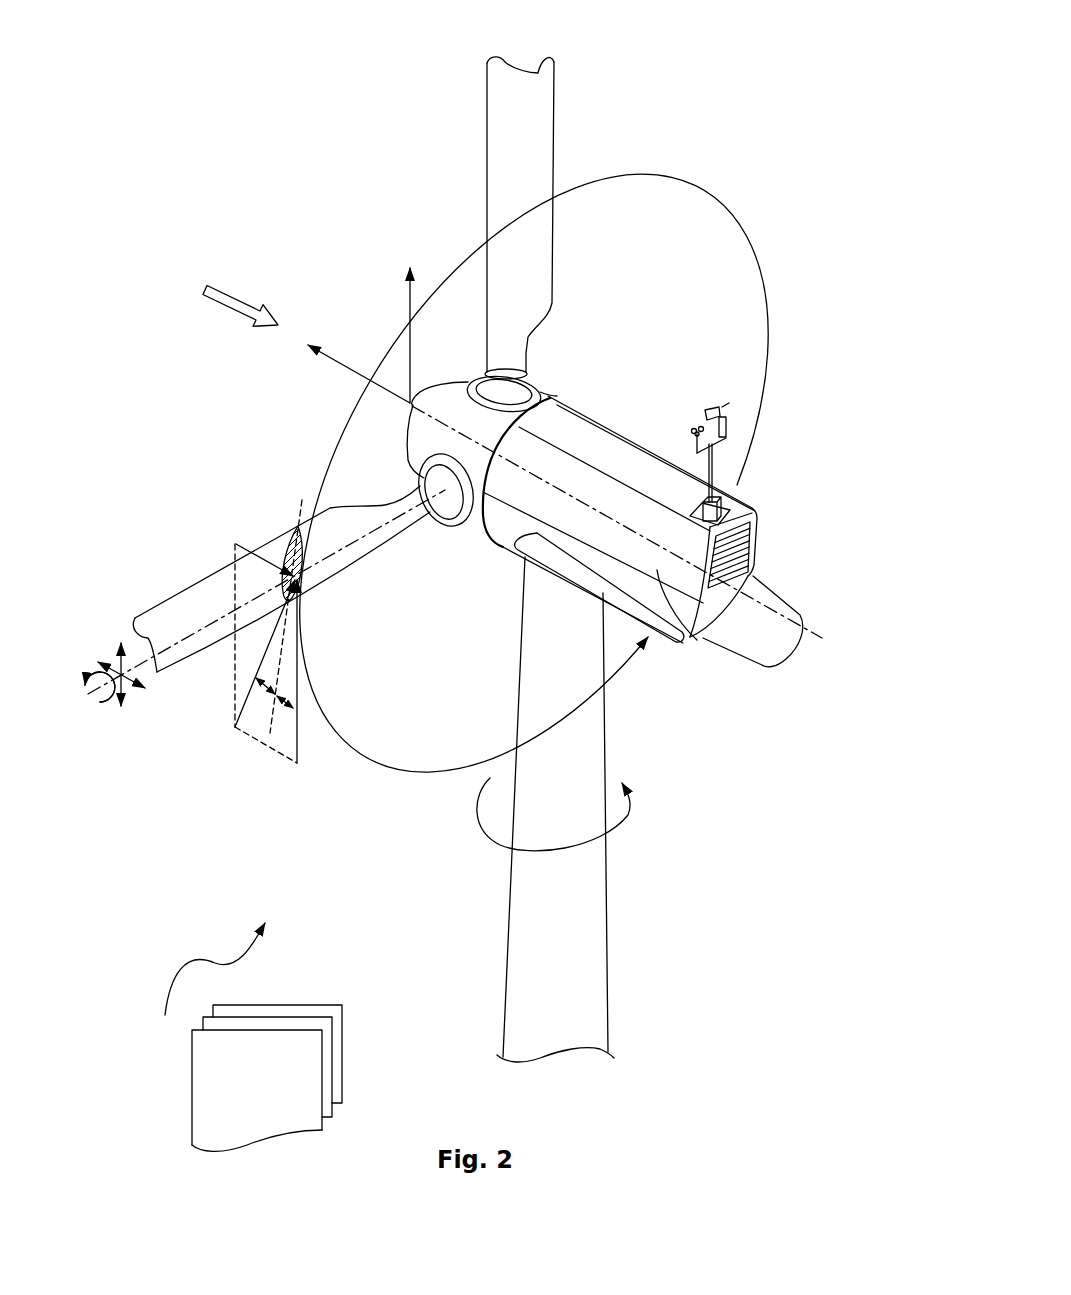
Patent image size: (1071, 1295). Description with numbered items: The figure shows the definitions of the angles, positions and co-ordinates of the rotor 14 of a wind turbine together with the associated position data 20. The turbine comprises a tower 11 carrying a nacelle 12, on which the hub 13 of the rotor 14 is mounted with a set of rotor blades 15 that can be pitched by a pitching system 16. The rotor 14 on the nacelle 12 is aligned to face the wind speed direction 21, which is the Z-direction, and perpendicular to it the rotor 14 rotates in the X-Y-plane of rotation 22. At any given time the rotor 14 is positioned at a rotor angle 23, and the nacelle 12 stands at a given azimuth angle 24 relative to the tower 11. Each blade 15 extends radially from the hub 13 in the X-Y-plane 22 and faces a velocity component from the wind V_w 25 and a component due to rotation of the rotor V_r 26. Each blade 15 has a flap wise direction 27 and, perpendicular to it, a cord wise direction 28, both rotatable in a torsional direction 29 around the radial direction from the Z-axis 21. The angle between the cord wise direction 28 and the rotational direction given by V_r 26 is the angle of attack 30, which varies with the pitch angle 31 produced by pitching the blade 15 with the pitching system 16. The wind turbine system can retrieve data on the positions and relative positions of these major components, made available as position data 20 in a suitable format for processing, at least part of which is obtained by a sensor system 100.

The tower 11 is at (580, 962).
The nacelle 12 is at (692, 636).
The hub 13 is at (420, 432).
The rotor 14 is at (420, 165).
The rotor blades 15 is at (540, 107).
The pitching system 16 is at (547, 392).
The position data 20 is at (223, 1108).
The wind speed direction 21 is at (235, 303).
The X-Y-plane of rotation 22 is at (687, 240).
The rotor angle 23 is at (320, 715).
The azimuth angle 24 is at (490, 830).
The wind velocity component V_w 25 is at (297, 526).
The rotational velocity component V_r 26 is at (285, 570).
The flap wise direction 27 is at (95, 668).
The cord wise direction 28 is at (112, 658).
The torsional direction 29 is at (98, 703).
The angle of attack 30 is at (263, 753).
The pitch angle 31 is at (285, 735).
The sensor system 100 is at (716, 460).